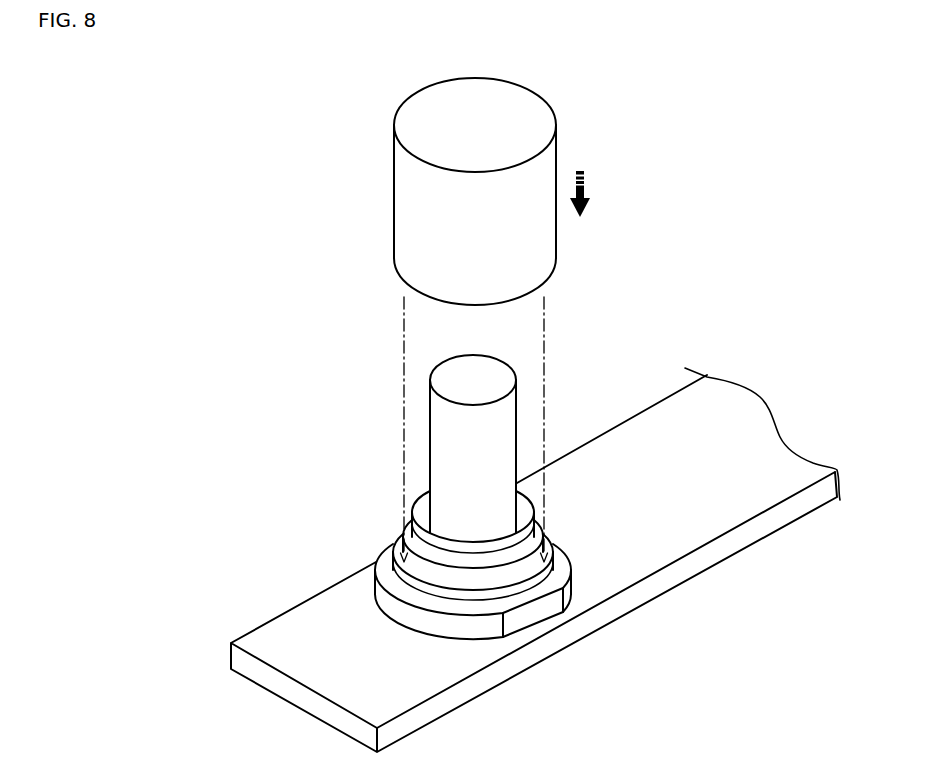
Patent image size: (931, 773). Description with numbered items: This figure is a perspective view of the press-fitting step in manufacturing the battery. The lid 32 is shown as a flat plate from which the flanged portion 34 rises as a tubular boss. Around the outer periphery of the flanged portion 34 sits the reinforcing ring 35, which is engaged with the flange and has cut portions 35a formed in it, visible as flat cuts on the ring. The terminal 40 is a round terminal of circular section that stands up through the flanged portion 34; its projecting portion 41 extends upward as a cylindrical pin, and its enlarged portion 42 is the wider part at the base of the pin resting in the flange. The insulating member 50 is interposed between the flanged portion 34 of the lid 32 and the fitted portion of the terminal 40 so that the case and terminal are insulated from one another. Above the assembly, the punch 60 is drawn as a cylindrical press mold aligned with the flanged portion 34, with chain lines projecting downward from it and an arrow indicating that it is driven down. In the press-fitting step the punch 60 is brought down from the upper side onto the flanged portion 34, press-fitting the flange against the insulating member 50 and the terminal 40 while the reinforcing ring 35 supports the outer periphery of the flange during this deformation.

The lid 32 is at (262, 643).
The flanged portion 34 is at (403, 567).
The reinforcing ring 35 is at (393, 612).
The cut portions 35a is at (393, 531).
The terminal 40 is at (553, 383).
The projecting portion 41 is at (510, 452).
The enlarged portion 42 is at (540, 540).
The insulating member 50 is at (525, 582).
The punch 60 is at (379, 196).